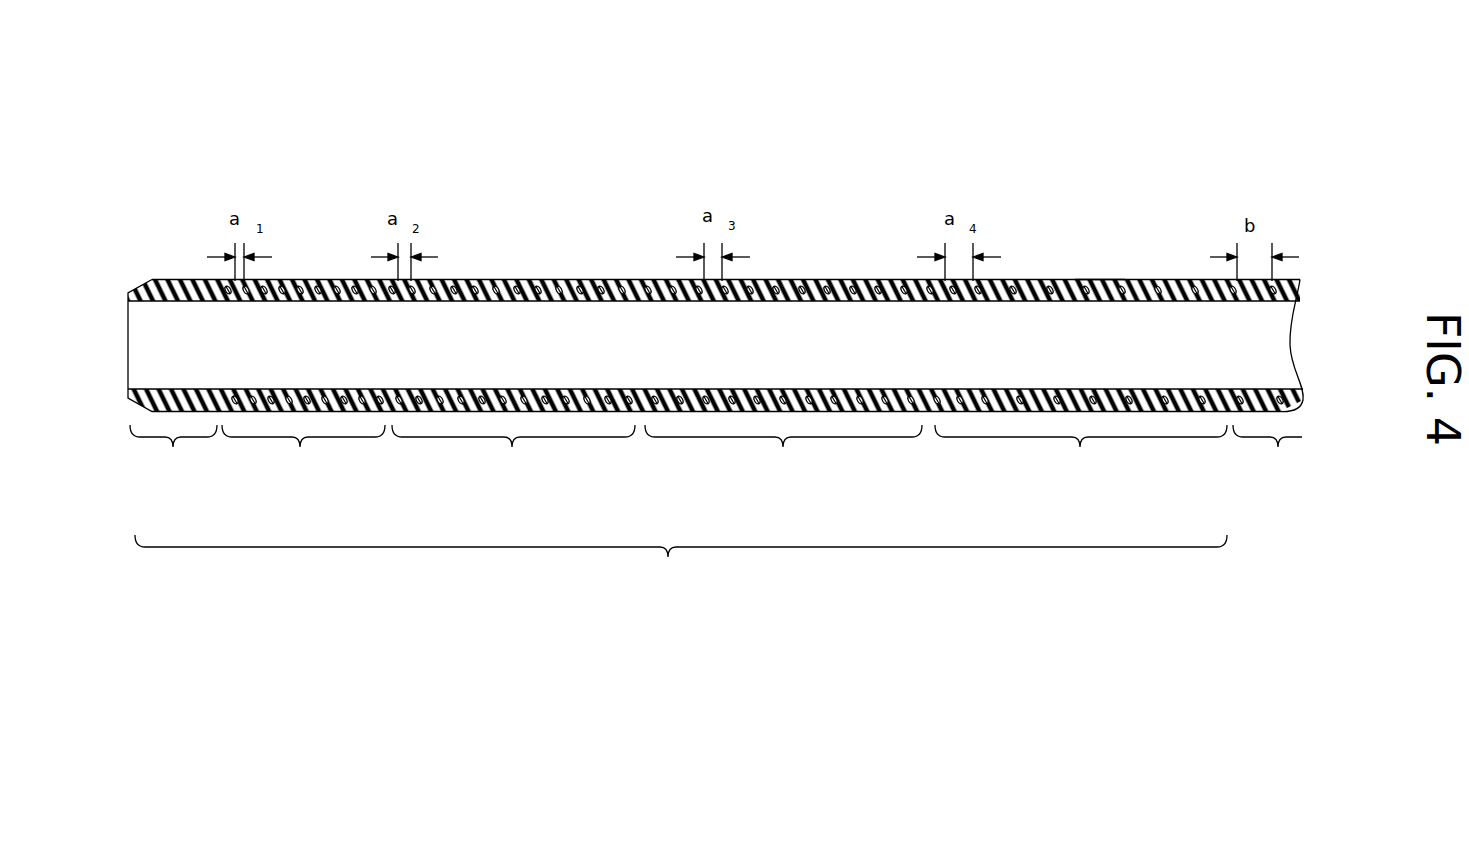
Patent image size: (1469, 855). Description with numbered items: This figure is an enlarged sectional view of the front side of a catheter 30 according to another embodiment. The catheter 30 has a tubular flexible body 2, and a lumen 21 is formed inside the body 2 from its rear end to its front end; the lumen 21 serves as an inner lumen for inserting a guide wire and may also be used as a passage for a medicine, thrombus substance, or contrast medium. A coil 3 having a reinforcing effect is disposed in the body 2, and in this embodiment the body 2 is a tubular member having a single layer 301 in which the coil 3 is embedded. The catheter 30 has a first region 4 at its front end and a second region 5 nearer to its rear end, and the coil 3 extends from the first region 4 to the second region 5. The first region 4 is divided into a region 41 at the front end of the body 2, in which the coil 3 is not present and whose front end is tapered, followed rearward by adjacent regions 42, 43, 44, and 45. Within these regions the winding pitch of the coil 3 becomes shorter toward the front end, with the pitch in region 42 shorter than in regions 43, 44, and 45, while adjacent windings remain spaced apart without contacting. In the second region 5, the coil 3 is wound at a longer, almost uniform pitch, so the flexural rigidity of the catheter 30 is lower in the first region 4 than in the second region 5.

The body 2 is at (715, 222).
The lumen 21 is at (638, 356).
The coil 3 is at (560, 280).
The catheter 30 is at (715, 222).
The single layer 301 is at (1100, 280).
The first region 4 is at (678, 517).
The region 41 is at (173, 461).
The region 42 is at (303, 461).
The region 43 is at (513, 461).
The region 44 is at (783, 461).
The region 45 is at (1081, 461).
The second region 5 is at (1267, 461).